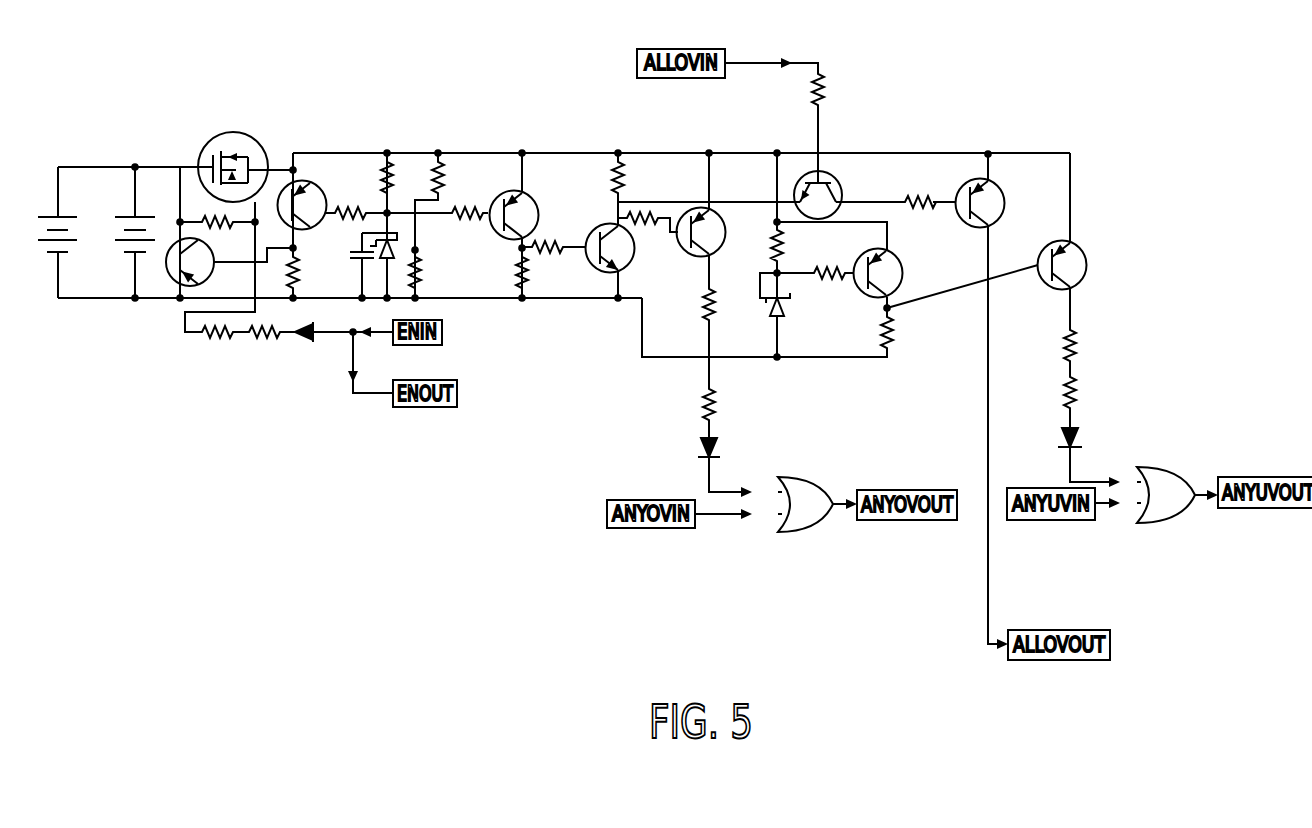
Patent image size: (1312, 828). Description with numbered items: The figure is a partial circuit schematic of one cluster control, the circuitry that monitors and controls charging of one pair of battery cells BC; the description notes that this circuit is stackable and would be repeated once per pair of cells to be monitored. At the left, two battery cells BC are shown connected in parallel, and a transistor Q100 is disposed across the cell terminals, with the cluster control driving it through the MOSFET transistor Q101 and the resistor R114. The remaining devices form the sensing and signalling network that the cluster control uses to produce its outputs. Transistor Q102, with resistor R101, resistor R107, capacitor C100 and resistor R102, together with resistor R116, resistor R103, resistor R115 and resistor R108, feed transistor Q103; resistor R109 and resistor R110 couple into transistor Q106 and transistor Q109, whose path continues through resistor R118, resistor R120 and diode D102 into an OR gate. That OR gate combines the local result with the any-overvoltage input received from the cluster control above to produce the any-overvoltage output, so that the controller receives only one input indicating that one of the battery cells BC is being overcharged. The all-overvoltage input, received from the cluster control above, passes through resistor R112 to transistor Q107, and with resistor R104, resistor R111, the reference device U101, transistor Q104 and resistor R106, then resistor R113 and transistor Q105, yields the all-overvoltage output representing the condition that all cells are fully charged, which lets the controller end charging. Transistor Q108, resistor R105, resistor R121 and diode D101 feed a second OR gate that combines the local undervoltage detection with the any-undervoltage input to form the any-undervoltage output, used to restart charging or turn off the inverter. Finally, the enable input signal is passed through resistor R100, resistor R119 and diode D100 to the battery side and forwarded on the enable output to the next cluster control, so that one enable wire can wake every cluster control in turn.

The battery cell BC is at (96, 219).
The transistor Q101 is at (233, 153).
The resistor R114 is at (217, 236).
The transistor Q100 is at (208, 265).
The transistor Q102 is at (317, 211).
The resistor R101 is at (354, 193).
The resistor R107 is at (317, 273).
The capacitor C100 is at (344, 255).
The resistor R102 is at (402, 175).
The resistor R116 is at (463, 177).
The resistor R103 is at (470, 228).
The resistor R115 is at (440, 272).
The resistor R108 is at (500, 273).
The transistor Q103 is at (532, 205).
The resistor R109 is at (551, 261).
The resistor R110 is at (641, 177).
The transistor Q106 is at (629, 255).
The transistor Q109 is at (687, 244).
The resistor R118 is at (686, 304).
The resistor R120 is at (734, 404).
The diode D102 is at (732, 450).
The resistor R112 is at (847, 89).
The transistor Q107 is at (838, 188).
The resistor R104 is at (803, 245).
The resistor R111 is at (828, 288).
The voltage reference / zener diode U101 is at (757, 315).
The transistor Q104 is at (902, 273).
The resistor R106 is at (911, 332).
The resistor R113 is at (917, 185).
The transistor Q105 is at (1004, 201).
The transistor Q108 is at (1088, 265).
The resistor R105 is at (1095, 345).
The resistor R121 is at (1095, 392).
The diode D101 is at (1094, 440).
The resistor R100 is at (222, 349).
The resistor R119 is at (269, 349).
The diode D100 is at (315, 347).